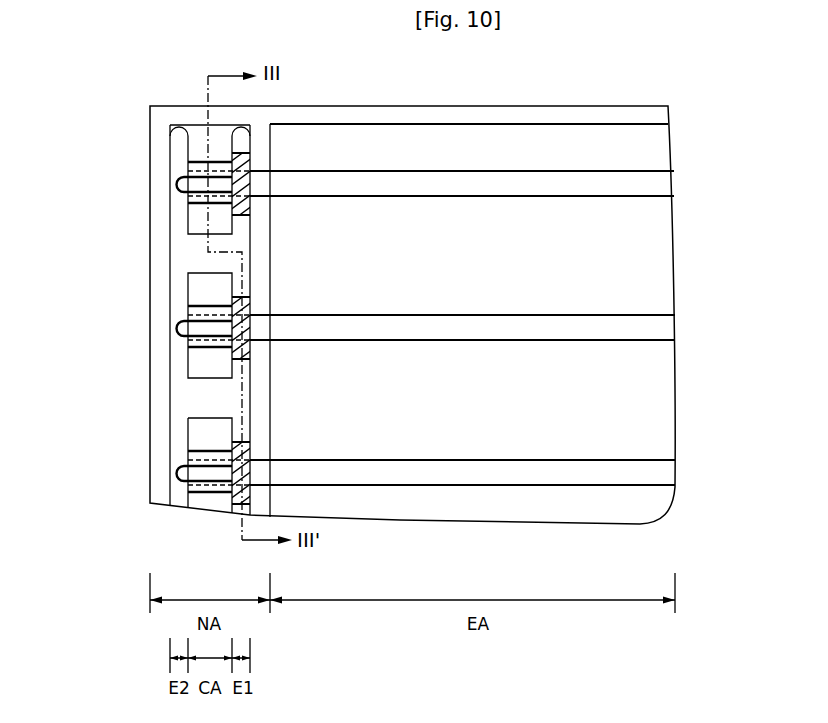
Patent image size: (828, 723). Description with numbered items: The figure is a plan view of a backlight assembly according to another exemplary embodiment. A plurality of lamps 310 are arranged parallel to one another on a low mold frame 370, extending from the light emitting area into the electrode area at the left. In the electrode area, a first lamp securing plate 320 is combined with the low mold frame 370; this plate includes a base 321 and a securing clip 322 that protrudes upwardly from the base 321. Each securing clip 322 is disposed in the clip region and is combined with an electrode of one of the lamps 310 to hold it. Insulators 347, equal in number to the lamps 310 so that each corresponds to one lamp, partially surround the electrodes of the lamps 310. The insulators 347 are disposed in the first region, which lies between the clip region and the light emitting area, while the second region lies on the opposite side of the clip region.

The low mold frame 370 is at (510, 115).
The lamps 310 is at (670, 183).
The first lamp securing plate 320 is at (128, 324).
The base 321 is at (201, 254).
The securing clip 322 is at (196, 201).
The insulators 347 is at (232, 444).